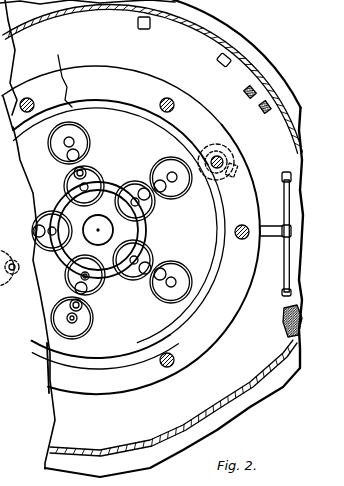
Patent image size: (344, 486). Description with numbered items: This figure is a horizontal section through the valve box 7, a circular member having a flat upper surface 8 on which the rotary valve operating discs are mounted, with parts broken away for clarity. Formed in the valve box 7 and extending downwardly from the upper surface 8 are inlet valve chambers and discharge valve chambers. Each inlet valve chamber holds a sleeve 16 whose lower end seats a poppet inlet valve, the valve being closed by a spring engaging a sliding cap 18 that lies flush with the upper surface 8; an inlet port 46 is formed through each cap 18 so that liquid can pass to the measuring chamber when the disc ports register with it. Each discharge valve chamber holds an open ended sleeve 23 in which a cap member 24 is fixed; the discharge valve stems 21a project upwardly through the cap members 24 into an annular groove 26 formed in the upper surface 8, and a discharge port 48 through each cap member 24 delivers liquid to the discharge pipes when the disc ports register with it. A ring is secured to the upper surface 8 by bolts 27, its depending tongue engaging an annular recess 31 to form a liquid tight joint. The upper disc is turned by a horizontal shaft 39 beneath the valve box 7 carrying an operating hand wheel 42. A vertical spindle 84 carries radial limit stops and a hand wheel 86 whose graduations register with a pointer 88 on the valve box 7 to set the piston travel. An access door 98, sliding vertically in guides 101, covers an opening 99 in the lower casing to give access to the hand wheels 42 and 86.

The valve box 7 is at (120, 66).
The flat upper surface 8 is at (150, 95).
The annular recess 31 is at (53, 77).
The bolts 27 is at (160, 111).
The pointer 88 is at (239, 220).
The annular groove 26 is at (147, 229).
The sleeves 16 is at (91, 148).
The caps 18 is at (180, 268).
The discharge port 48 is at (74, 173).
The cap members 24 is at (97, 288).
The open ended sleeves 23 is at (94, 336).
The inlet port 46 is at (50, 318).
The discharge valve stems 21a is at (47, 283).
The opening 99 is at (281, 110).
The access door 98 is at (289, 148).
The guides 101 is at (250, 95).
The hand wheel 86 is at (228, 135).
The vertical spindle 84 is at (231, 160).
The operating hand wheel 42 is at (286, 206).
The horizontal shaft 39 is at (276, 237).